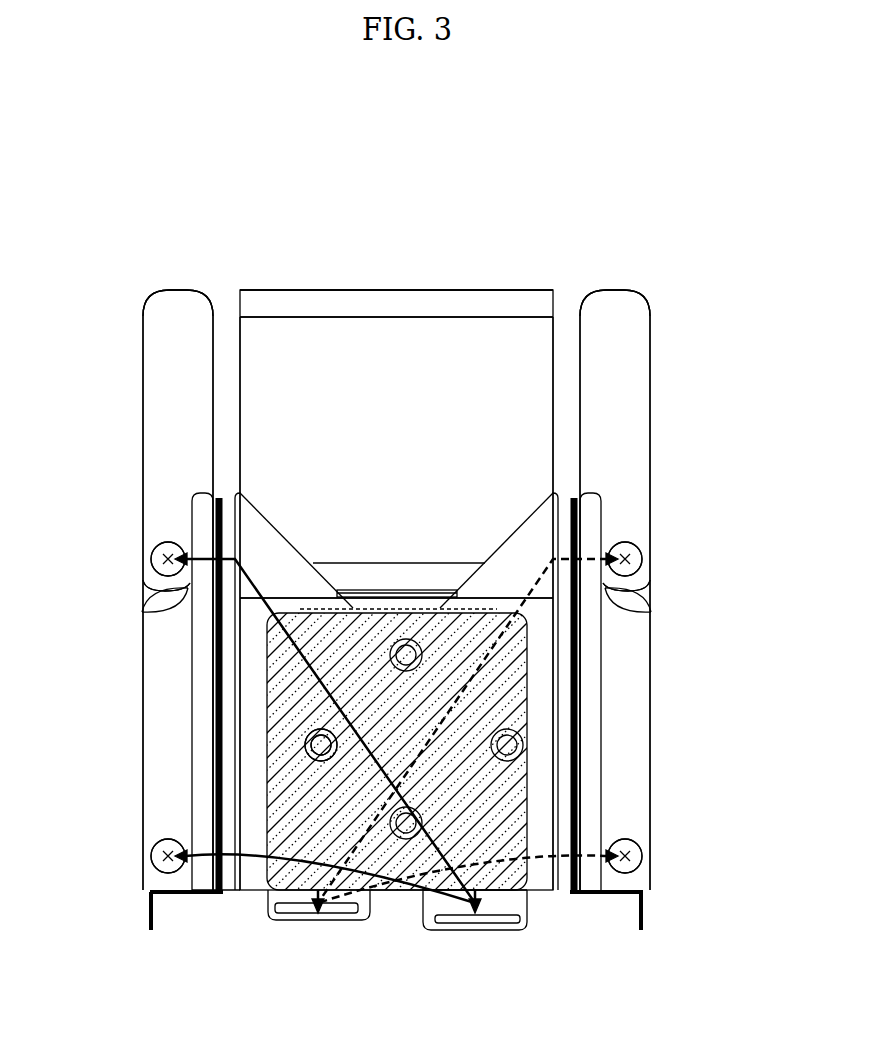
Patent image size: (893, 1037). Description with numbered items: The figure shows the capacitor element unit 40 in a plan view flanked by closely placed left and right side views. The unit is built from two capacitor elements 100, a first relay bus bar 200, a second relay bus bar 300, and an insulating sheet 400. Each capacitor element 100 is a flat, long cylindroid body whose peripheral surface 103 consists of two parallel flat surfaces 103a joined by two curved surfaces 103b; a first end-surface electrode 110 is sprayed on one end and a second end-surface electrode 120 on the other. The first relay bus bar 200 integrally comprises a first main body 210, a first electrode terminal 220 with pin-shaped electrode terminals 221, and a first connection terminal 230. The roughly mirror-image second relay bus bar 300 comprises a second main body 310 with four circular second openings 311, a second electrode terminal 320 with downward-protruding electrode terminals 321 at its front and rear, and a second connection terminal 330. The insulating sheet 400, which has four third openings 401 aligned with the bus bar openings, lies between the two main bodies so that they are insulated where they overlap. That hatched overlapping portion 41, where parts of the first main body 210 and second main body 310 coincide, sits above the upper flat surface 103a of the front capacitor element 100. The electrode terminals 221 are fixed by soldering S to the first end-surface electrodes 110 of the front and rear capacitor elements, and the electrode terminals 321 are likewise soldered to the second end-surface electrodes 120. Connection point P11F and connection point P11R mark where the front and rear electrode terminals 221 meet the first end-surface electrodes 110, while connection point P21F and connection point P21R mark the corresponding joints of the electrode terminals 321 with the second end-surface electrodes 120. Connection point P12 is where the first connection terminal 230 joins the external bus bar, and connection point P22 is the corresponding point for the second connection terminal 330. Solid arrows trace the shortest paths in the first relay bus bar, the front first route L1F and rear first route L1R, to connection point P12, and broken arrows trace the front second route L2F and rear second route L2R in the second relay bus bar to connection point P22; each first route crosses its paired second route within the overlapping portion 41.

The capacitor element unit 40 is at (178, 280).
The capacitor element 100 is at (470, 280).
The peripheral surface 103 is at (390, 290).
The flat surface 103a is at (350, 352).
The curved surface 103b is at (150, 898).
The first end-surface electrode 110 is at (170, 447).
The second end-surface electrode 120 is at (623, 447).
The first relay bus bar 200 is at (180, 742).
The first main body 210 is at (265, 520).
The first electrode terminal 220 is at (185, 497).
The electrode terminal 221 is at (143, 614).
The first connection terminal 230 is at (197, 905).
The second relay bus bar 300 is at (610, 745).
The second main body 310 is at (530, 540).
The second opening 311 is at (321, 762).
The second electrode terminal 320 is at (607, 497).
The electrode terminal 321 is at (650, 614).
The second connection terminal 330 is at (290, 925).
The insulating sheet 400 is at (430, 600).
The third opening 401 is at (318, 737).
The overlapping portion 41 is at (385, 605).
The soldering S is at (157, 547).
The connection point P11R is at (150, 560).
The connection point P21R is at (641, 560).
The connection point P11F is at (150, 858).
The connection point P21F is at (642, 858).
The rear first route L1R is at (272, 620).
The rear second route L2R is at (522, 620).
The front first route L1F is at (245, 888).
The front second route L2F is at (540, 888).
The connection point P12 is at (480, 925).
The connection point P22 is at (325, 922).